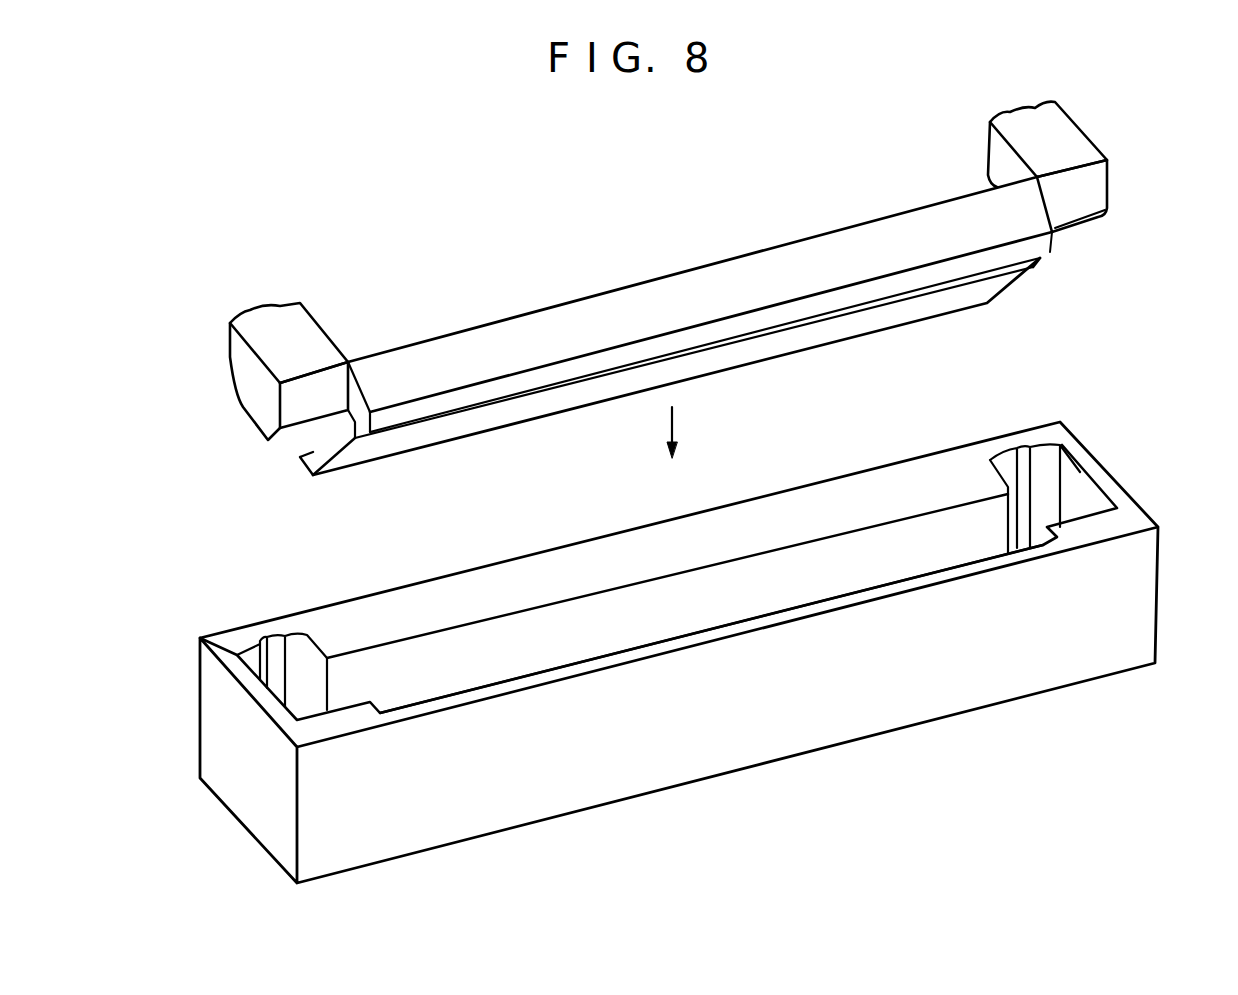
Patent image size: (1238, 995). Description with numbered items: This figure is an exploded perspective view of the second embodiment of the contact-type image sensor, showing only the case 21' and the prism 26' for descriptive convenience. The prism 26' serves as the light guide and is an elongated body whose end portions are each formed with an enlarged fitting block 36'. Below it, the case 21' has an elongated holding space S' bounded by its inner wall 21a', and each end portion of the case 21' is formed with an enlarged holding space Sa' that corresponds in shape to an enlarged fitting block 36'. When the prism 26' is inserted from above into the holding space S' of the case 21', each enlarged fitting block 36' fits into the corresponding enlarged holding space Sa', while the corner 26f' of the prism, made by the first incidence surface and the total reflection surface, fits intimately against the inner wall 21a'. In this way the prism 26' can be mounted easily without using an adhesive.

The case 21' is at (704, 646).
The inner wall of the case 21a' is at (667, 576).
The holding space S' is at (711, 574).
The enlarged holding space Sa' is at (686, 545).
The prism 26' is at (682, 319).
The corner of the prism 26f' is at (287, 473).
The enlarged fitting block 36' is at (701, 271).